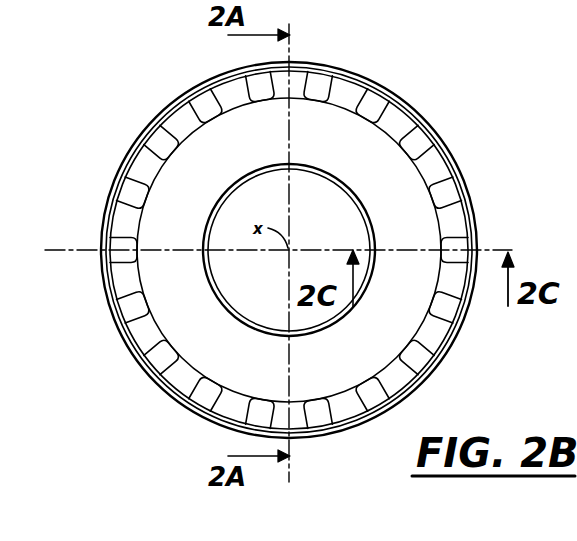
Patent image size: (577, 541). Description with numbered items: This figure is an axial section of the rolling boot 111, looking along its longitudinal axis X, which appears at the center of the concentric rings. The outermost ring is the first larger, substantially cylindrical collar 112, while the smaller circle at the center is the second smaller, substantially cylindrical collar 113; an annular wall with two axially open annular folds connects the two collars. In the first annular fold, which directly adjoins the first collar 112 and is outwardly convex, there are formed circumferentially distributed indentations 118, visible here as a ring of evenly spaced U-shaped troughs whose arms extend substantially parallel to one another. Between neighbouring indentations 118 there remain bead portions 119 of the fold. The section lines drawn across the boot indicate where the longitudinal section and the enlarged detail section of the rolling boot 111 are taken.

The rolling boot 111 is at (463, 90).
The first collar 112 is at (152, 378).
The second collar 113 is at (233, 318).
The indentations 118 is at (320, 84).
The bead portions 119 is at (355, 88).